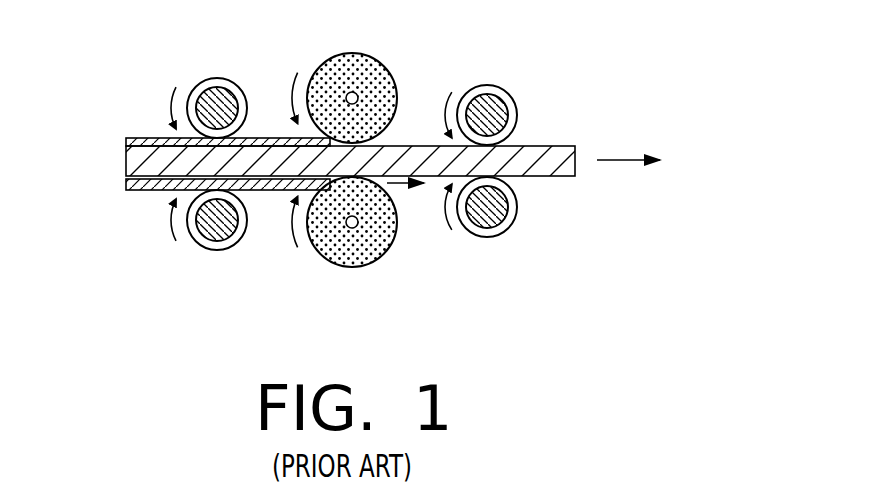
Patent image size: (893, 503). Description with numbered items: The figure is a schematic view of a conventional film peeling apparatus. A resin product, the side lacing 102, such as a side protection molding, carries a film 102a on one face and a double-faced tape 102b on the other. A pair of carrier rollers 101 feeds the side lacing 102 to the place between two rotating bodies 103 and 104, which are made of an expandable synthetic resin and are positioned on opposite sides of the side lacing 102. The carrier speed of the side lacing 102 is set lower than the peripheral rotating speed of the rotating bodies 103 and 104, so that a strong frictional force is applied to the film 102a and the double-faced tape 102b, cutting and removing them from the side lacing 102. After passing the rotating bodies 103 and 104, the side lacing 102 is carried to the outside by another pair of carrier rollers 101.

The carrier rollers 101 is at (217, 93).
The side lacing 102 is at (417, 157).
The film 102a is at (160, 138).
The double-faced tape 102b is at (160, 192).
The rotating body 103 is at (335, 62).
The rotating body 104 is at (335, 245).